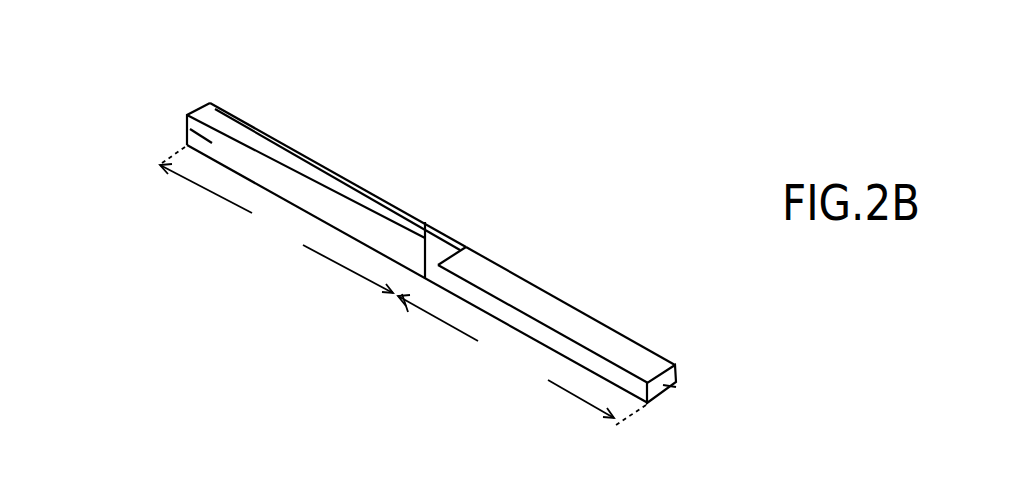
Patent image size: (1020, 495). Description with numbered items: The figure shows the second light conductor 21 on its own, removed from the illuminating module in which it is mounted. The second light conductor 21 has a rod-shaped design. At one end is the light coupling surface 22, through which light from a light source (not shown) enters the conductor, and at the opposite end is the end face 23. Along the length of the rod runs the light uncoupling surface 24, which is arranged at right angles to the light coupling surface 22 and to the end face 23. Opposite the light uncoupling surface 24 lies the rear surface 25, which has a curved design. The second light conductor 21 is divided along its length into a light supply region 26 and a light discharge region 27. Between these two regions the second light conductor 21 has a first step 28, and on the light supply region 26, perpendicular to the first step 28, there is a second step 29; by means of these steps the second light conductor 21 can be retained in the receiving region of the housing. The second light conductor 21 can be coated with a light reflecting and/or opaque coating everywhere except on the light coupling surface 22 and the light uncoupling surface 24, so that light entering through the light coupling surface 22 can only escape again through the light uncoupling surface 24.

The second light conductor 21 is at (422, 217).
The light coupling surface 22 is at (683, 381).
The end face 23 is at (196, 106).
The light uncoupling surface 24 is at (187, 122).
The rear surface 25 is at (260, 128).
The light supply region 26 is at (522, 360).
The light discharge region 27 is at (276, 220).
The first step 28 is at (425, 238).
The second step 29 is at (470, 246).